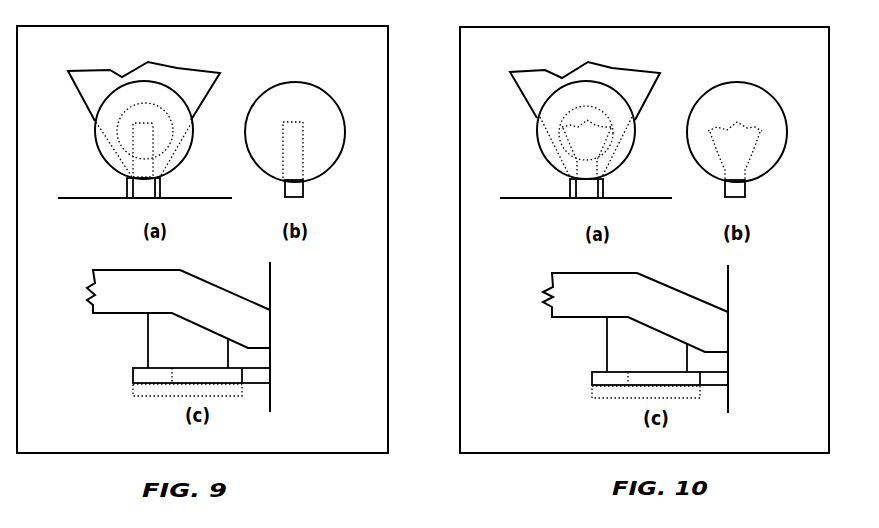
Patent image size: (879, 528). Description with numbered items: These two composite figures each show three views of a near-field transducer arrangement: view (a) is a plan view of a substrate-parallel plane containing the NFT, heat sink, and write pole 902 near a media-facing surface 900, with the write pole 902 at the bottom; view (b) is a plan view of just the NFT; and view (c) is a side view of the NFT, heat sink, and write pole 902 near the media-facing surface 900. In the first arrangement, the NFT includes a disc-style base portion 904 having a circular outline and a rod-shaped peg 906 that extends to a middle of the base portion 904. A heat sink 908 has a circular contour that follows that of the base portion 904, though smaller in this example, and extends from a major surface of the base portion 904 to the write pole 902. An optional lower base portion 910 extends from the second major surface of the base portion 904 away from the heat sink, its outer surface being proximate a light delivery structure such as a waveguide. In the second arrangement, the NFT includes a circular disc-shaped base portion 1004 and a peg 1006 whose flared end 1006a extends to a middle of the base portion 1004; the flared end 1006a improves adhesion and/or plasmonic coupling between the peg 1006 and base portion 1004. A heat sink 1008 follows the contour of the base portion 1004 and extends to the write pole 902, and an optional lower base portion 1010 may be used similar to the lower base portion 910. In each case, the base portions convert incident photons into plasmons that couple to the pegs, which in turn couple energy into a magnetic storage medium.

In FIG. 9, the media-facing surface 900 is at (95, 199).
In FIG. 10, the media-facing surface 900 is at (537, 199).
In FIG. 9, the write pole 902 is at (220, 73).
In FIG. 10, the write pole 902 is at (660, 73).
In FIG. 9, the base portion 904 is at (96, 144).
In FIG. 9, the peg 906 is at (160, 184).
In FIG. 9, the heat sink 908 is at (118, 122).
In FIG. 9, the lower base portion 910 is at (135, 390).
In FIG. 10, the base portion 1004 is at (538, 147).
In FIG. 10, the peg 1006 is at (570, 183).
In FIG. 10, the flared end 1006a is at (714, 139).
In FIG. 10, the heat sink 1008 is at (563, 117).
In FIG. 10, the lower base portion 1010 is at (600, 393).